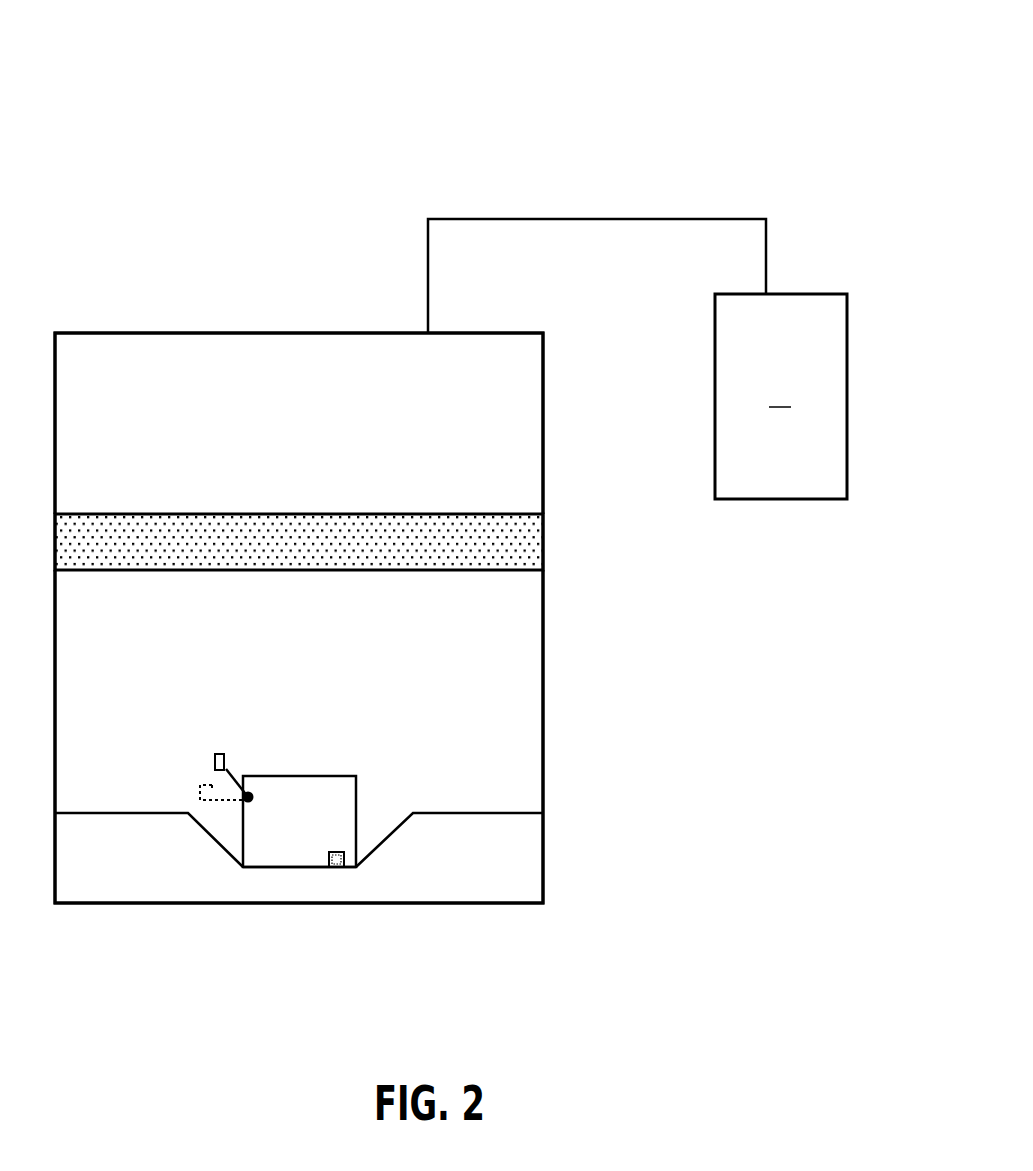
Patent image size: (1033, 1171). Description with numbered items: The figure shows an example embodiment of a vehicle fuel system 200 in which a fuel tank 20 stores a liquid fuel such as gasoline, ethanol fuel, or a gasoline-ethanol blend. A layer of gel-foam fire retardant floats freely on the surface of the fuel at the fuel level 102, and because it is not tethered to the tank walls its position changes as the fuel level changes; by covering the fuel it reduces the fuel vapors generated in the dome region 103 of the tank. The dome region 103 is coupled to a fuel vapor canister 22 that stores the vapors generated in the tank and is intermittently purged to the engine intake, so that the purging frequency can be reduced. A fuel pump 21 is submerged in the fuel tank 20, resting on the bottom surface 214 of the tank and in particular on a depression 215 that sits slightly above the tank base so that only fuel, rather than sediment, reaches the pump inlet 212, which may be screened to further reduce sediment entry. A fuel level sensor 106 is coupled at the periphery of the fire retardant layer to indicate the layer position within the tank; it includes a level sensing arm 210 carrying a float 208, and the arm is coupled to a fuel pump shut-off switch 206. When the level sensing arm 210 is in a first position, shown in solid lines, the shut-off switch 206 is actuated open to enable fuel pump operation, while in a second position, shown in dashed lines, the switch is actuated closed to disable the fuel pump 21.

The fuel system 200 is at (770, 26).
The fuel tank 20 is at (496, 331).
The fuel vapor canister 22 is at (781, 396).
The dome region 103 is at (527, 407).
The fuel level 102 is at (497, 660).
The fuel pump shut-off switch 206 is at (527, 550).
The bottom surface 214 is at (441, 812).
The fuel pump 21 is at (330, 776).
The depression 215 is at (264, 868).
The inlet 212 is at (340, 868).
The float 208 is at (215, 759).
The level sensing arm 210 is at (233, 775).
The fuel level sensor 106 is at (225, 740).